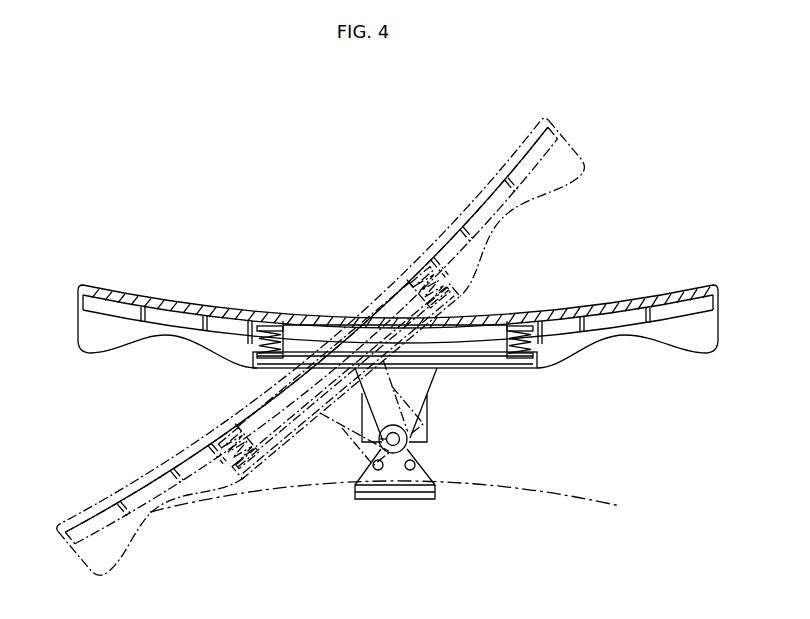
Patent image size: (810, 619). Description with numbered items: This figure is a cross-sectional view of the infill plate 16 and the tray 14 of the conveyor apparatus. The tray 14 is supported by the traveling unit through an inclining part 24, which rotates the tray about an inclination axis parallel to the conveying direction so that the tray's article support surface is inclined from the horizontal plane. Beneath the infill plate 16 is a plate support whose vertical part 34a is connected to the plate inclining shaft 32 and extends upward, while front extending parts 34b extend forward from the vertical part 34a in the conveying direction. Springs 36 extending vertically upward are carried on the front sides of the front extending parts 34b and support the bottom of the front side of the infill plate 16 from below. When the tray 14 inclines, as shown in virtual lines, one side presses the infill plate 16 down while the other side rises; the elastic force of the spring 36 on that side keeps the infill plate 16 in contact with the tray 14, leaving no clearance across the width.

The tray 14 is at (112, 280).
The infill plate 16 is at (78, 306).
The inclining part 24 is at (415, 403).
The plate inclining shaft 32 is at (380, 439).
The vertical part 34a is at (437, 448).
The front extending parts 34b is at (525, 366).
The springs 36 is at (535, 350).